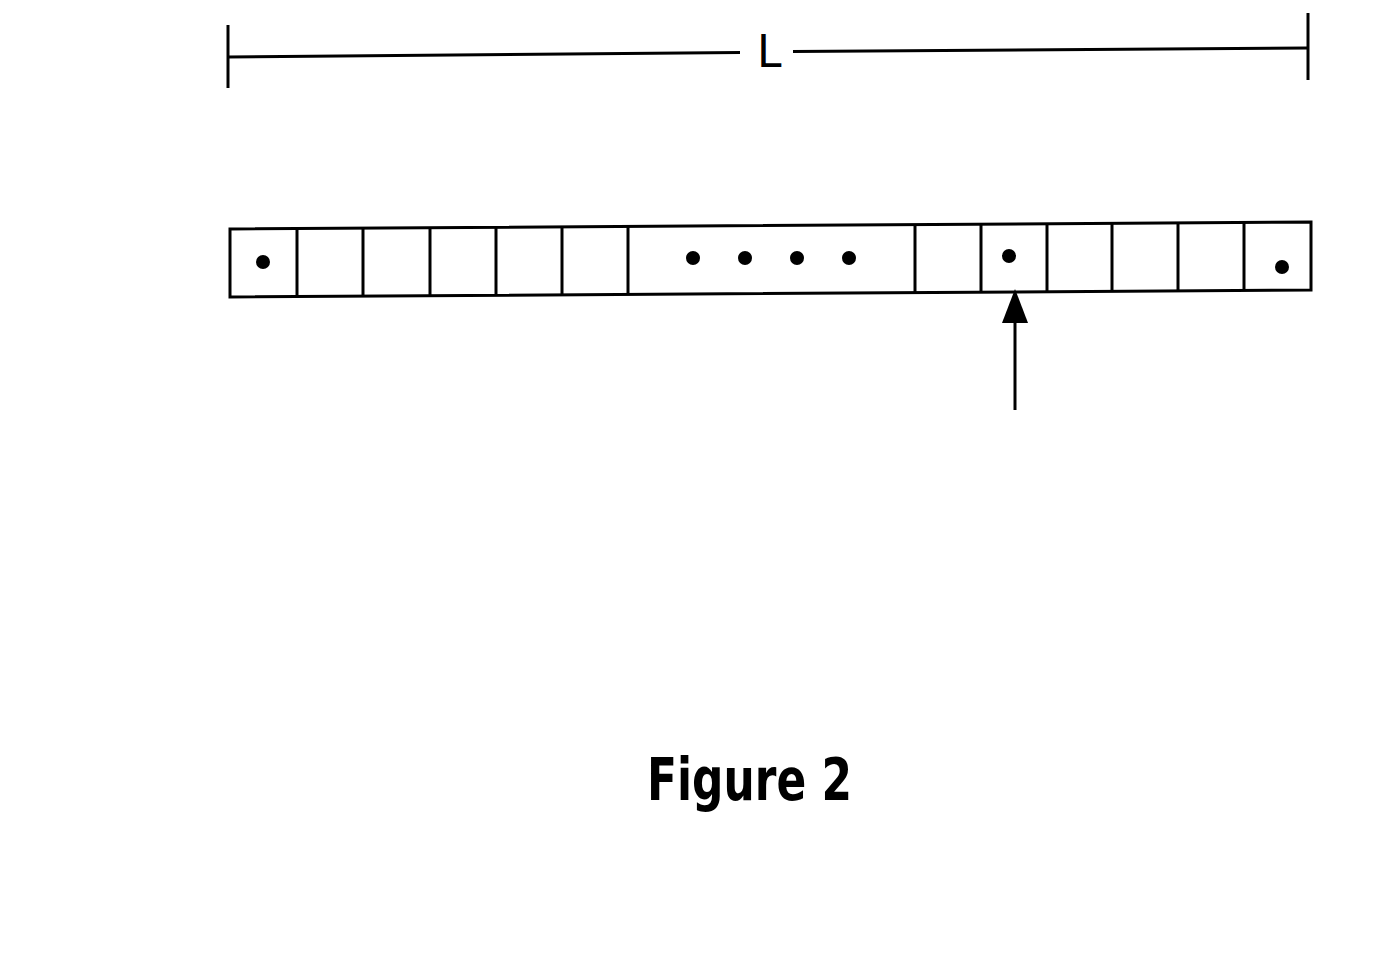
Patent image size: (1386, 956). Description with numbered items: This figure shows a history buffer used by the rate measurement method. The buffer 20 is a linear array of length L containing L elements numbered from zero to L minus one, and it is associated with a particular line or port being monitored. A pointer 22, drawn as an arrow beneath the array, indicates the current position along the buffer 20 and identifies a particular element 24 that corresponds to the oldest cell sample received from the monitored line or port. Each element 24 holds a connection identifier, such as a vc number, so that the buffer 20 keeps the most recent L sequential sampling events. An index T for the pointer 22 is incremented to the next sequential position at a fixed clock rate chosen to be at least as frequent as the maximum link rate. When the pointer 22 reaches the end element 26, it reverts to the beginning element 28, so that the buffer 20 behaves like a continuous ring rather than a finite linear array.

The buffer 20 is at (261, 300).
The pointer 22 is at (1017, 355).
The element 24 is at (1010, 255).
The end element 26 is at (1285, 272).
The beginning element 28 is at (263, 262).